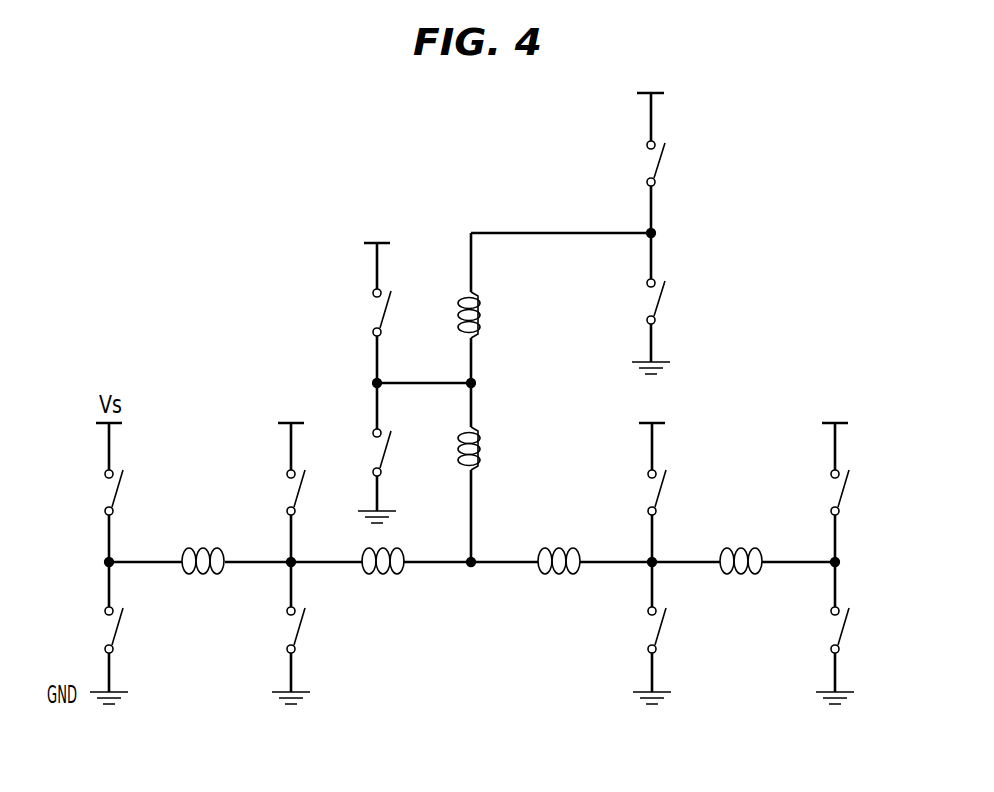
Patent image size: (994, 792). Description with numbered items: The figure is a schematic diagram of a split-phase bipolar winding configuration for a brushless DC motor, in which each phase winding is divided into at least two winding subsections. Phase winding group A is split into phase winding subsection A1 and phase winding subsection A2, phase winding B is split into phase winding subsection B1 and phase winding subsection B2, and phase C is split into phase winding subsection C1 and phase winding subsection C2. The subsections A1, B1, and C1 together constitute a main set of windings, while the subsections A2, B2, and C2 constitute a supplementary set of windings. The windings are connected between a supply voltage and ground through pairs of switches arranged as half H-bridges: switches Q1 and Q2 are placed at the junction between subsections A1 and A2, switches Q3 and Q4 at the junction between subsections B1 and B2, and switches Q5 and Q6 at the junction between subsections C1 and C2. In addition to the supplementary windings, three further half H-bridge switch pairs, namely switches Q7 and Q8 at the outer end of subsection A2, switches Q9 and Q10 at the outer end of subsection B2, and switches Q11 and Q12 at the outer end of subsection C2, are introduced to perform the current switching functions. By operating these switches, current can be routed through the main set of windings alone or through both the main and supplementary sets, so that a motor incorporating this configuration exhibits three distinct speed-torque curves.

The half H-bridge switch Q1 is at (369, 312).
The half H-bridge switch Q2 is at (369, 452).
The half H-bridge switch Q3 is at (644, 492).
The half H-bridge switch Q4 is at (644, 630).
The half H-bridge switch Q5 is at (283, 492).
The half H-bridge switch Q6 is at (283, 630).
The half H-bridge switch Q7 is at (643, 163).
The half H-bridge switch Q8 is at (643, 301).
The half H-bridge switch Q9 is at (857, 492).
The half H-bridge switch Q10 is at (859, 630).
The half H-bridge switch Q11 is at (99, 492).
The half H-bridge switch Q12 is at (99, 630).
The phase winding subsection A1 is at (520, 448).
The phase winding subsection A2 is at (520, 315).
The phase winding subsection B1 is at (560, 584).
The phase winding subsection B2 is at (742, 584).
The phase winding subsection C1 is at (383, 584).
The phase winding subsection C2 is at (203, 584).